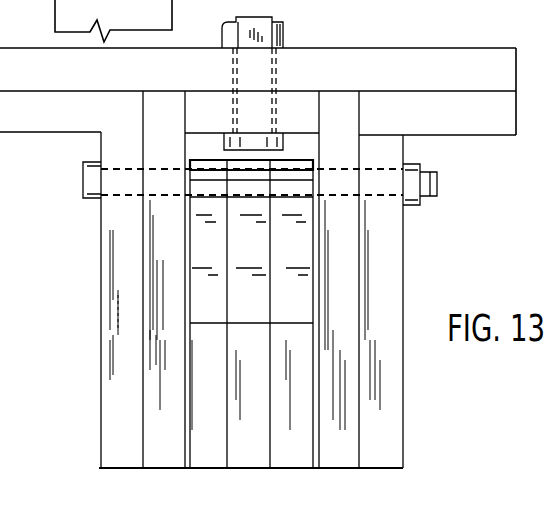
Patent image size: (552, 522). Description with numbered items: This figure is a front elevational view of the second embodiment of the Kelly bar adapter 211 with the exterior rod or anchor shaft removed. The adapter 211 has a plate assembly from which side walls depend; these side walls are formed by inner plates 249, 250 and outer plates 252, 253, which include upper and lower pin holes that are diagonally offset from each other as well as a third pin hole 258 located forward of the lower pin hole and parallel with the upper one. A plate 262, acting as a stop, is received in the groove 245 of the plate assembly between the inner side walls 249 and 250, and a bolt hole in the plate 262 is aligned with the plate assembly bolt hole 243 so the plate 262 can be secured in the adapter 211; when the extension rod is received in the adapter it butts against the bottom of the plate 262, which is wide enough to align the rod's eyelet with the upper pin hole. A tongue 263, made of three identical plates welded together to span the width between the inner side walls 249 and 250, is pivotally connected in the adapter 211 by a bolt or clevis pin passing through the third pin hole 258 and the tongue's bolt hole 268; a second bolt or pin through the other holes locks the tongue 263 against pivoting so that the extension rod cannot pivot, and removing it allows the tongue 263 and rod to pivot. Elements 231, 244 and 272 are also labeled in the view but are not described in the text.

The Kelly bar adapter 211 is at (71, 181).
The support beam 231 is at (527, 60).
The plate assembly bolt hole 243 is at (262, 72).
The bolt head 244 is at (258, 20).
The groove 245 is at (352, 122).
The inner plate 249 is at (164, 462).
The inner plate 250 is at (343, 452).
The outer plate 252 is at (110, 300).
The outer plate 253 is at (376, 448).
The third pin hole 258 is at (378, 167).
The plate 262 is at (212, 112).
The tongue 263 is at (280, 435).
The bolt hole 268 is at (312, 133).
The nut 272 is at (437, 181).